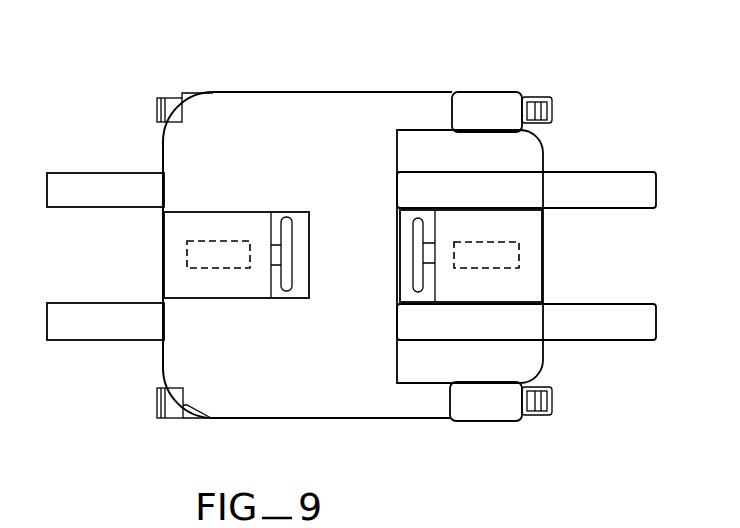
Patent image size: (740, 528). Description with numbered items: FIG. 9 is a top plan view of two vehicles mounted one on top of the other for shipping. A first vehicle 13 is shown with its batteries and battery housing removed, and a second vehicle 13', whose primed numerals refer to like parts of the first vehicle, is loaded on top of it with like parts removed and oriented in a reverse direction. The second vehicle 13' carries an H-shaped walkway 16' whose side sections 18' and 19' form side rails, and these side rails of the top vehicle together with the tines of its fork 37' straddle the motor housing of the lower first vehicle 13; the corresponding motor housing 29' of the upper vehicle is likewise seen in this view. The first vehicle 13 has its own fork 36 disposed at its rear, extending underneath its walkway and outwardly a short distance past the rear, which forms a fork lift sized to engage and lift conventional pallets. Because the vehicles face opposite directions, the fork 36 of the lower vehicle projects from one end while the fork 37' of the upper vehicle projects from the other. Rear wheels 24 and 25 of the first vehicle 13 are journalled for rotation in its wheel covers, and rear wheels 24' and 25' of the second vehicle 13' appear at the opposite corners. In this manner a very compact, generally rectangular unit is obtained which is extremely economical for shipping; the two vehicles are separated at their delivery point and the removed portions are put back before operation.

The second vehicle 13' is at (332, 70).
The walkway 16' is at (306, 255).
The first vehicle 13 is at (494, 256).
The motor housing 29' is at (236, 279).
The fork 36 is at (65, 340).
The fork 37' is at (534, 256).
The third side section 19' is at (477, 92).
The second side section 18' is at (476, 419).
The rear wheel 24' is at (563, 101).
The rear wheel 25' is at (569, 399).
The rear wheel 25 is at (155, 105).
The rear wheel 24 is at (164, 416).